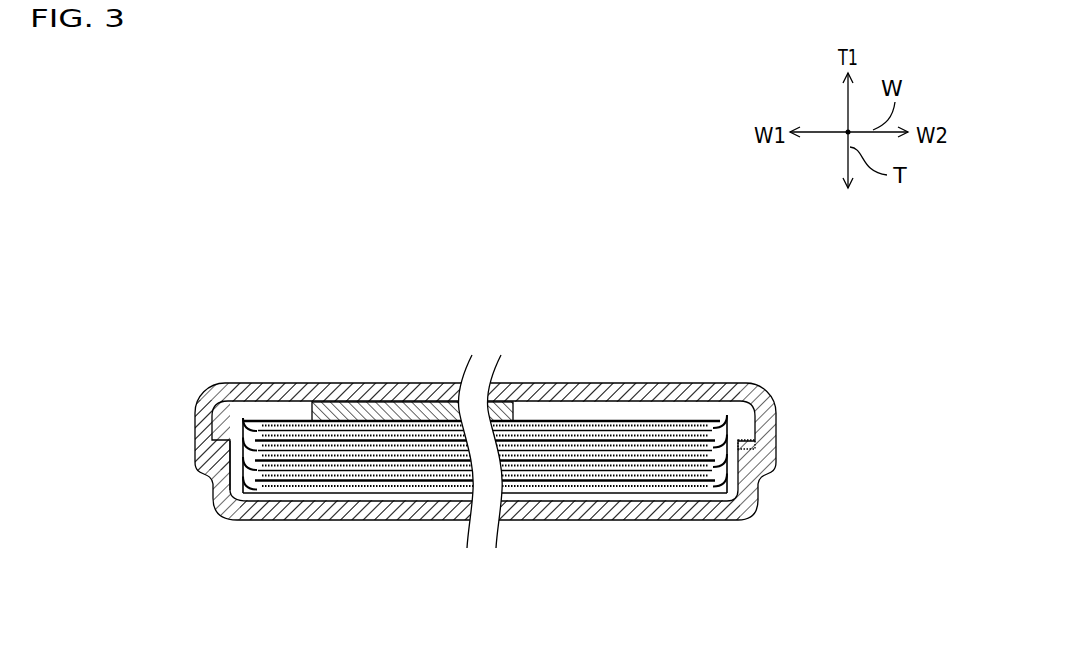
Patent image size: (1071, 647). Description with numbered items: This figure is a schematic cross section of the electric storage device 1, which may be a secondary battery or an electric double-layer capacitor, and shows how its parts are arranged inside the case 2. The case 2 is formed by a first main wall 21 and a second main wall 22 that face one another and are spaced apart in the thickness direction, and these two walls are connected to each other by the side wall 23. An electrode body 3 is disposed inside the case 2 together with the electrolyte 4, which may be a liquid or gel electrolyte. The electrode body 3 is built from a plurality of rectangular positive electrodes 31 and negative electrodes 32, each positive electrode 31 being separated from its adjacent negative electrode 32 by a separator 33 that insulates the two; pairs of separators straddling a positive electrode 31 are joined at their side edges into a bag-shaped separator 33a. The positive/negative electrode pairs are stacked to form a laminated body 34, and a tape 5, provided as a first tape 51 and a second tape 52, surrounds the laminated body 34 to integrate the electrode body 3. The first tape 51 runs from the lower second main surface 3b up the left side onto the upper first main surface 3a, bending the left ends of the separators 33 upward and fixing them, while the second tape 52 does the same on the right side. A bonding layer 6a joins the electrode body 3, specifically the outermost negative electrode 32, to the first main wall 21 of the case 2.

The electric storage device 1 is at (737, 297).
The case 2 is at (469, 438).
The first main wall 21 is at (548, 385).
The second main wall 22 is at (397, 520).
The side wall 23 is at (195, 436).
The electrode body 3 is at (421, 438).
The first main surface 3a is at (612, 420).
The second main surface 3b is at (637, 487).
The positive electrode 31 is at (300, 422).
The negative electrode 32 is at (308, 490).
The separator 33 is at (272, 486).
The bag-shaped separator 33a is at (590, 483).
The laminated body 34 is at (662, 418).
The electrolyte 4 is at (228, 417).
The tape 5 is at (272, 413).
The bonding layer 6a is at (398, 402).
The first tape 51 is at (240, 453).
The second tape 52 is at (732, 448).